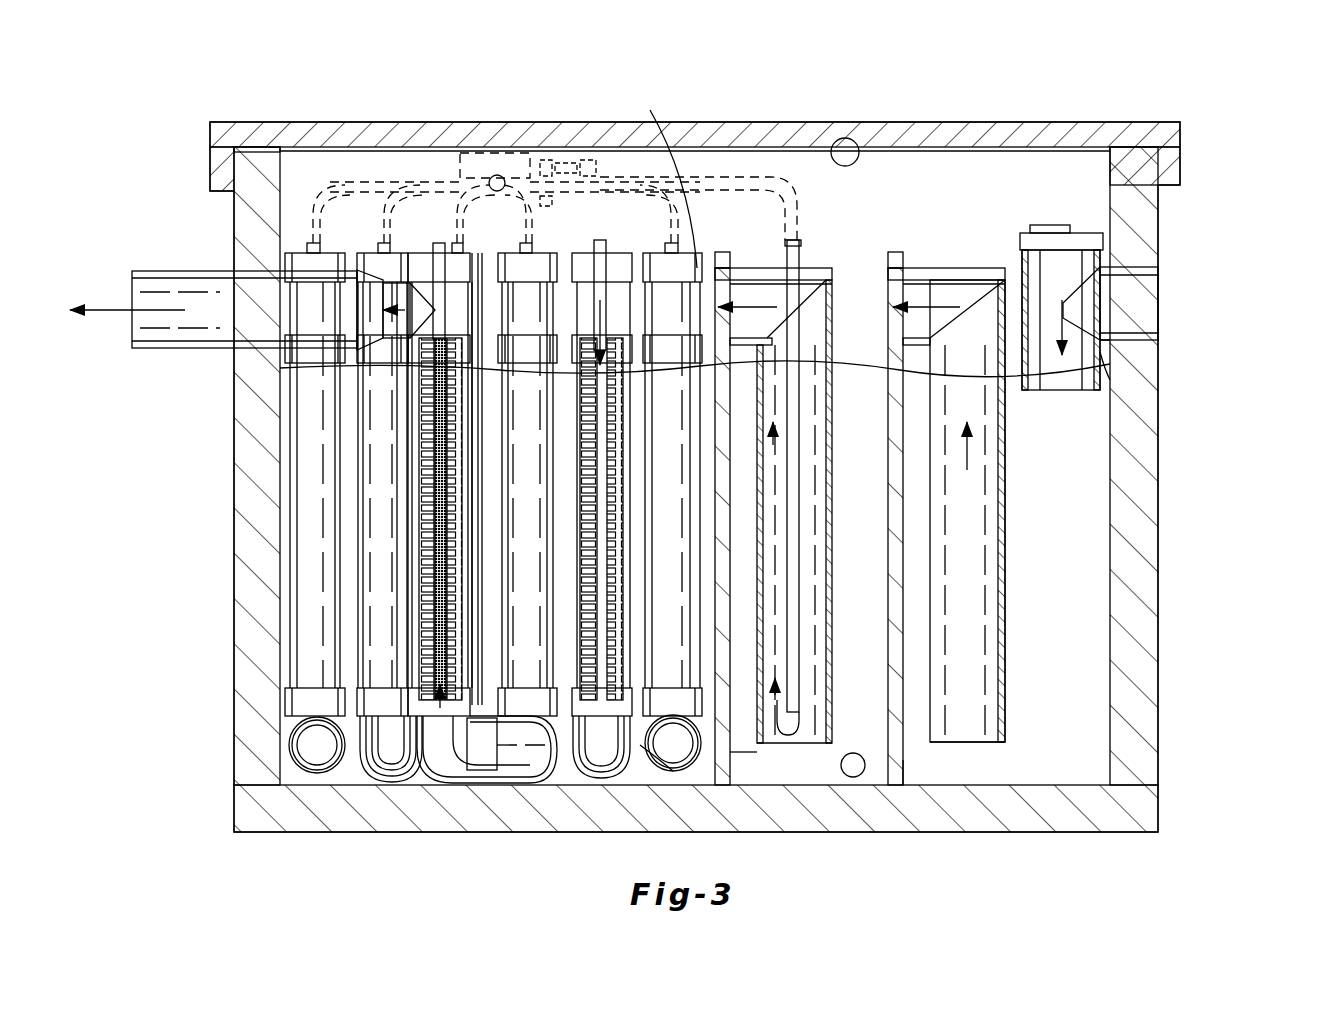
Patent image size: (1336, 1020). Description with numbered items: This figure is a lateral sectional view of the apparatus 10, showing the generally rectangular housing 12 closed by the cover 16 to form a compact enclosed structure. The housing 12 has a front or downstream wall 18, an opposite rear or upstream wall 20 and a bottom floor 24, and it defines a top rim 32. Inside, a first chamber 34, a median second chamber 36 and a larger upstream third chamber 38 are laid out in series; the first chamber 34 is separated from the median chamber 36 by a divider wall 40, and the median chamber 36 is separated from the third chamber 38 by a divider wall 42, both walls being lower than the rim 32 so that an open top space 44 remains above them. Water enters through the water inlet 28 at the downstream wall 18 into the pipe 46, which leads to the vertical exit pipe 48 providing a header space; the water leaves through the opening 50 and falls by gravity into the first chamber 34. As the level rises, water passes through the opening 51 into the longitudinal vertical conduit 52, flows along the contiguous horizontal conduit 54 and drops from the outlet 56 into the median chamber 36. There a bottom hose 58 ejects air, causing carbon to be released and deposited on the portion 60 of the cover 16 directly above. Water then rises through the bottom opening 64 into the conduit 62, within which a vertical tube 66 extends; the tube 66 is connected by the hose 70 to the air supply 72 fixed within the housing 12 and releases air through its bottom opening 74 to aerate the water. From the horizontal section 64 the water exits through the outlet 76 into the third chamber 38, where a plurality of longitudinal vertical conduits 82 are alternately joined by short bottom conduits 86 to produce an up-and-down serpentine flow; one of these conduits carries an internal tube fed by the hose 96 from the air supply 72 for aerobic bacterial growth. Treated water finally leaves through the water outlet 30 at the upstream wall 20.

The apparatus 10 is at (1205, 103).
The housing 12 is at (1185, 512).
The cover 16 is at (930, 122).
The front or downstream wall 18 is at (1135, 425).
The rear or upstream wall 20 is at (235, 445).
The bottom floor 24 is at (1080, 777).
The water inlet 28 is at (1158, 300).
The water outlet 30 is at (132, 280).
The top rim 32 is at (278, 170).
The first chamber 34 is at (1070, 717).
The second chamber 36 is at (873, 780).
The third chamber 38 is at (285, 782).
The divider wall 40 is at (903, 750).
The divider wall 42 is at (732, 752).
The open top space 44 is at (1070, 183).
The pipe 46 is at (1110, 370).
The vertical exit pipe 48 is at (1032, 237).
The opening 50 is at (1060, 400).
The opening 51 is at (1010, 745).
The longitudinal vertical conduit 52 is at (1005, 568).
The horizontal conduit 54 is at (935, 268).
The outlet 56 is at (886, 290).
The bottom hose 58 is at (853, 777).
The portion of cover 60 is at (840, 140).
The conduit 62 is at (832, 558).
The bottom opening / horizontal section 64 is at (757, 267).
The vertical tube 66 is at (795, 415).
The hose 70 is at (705, 140).
The air supply 72 is at (480, 165).
The bottom opening 74 is at (820, 712).
The outlet 76 is at (659, 174).
The longitudinal vertical conduits 82 is at (360, 568).
The short bottom conduit 86 is at (640, 745).
The hose 96 is at (590, 160).